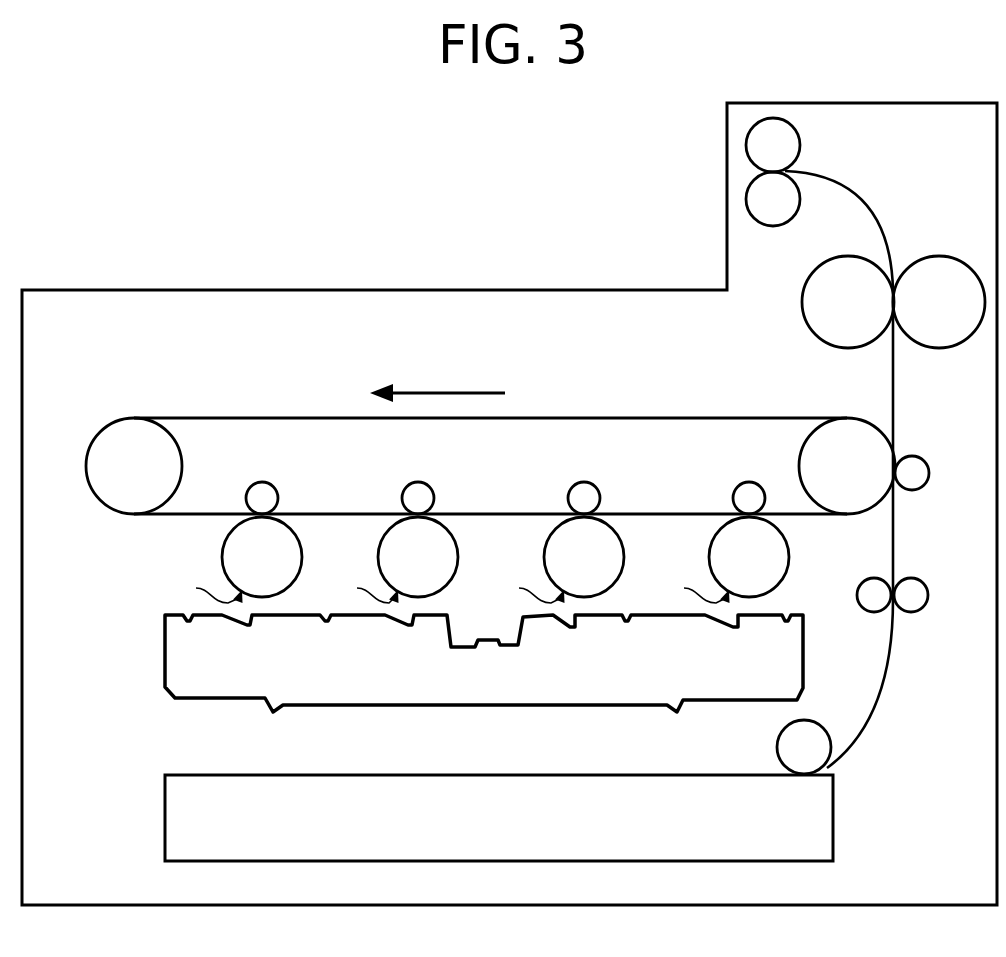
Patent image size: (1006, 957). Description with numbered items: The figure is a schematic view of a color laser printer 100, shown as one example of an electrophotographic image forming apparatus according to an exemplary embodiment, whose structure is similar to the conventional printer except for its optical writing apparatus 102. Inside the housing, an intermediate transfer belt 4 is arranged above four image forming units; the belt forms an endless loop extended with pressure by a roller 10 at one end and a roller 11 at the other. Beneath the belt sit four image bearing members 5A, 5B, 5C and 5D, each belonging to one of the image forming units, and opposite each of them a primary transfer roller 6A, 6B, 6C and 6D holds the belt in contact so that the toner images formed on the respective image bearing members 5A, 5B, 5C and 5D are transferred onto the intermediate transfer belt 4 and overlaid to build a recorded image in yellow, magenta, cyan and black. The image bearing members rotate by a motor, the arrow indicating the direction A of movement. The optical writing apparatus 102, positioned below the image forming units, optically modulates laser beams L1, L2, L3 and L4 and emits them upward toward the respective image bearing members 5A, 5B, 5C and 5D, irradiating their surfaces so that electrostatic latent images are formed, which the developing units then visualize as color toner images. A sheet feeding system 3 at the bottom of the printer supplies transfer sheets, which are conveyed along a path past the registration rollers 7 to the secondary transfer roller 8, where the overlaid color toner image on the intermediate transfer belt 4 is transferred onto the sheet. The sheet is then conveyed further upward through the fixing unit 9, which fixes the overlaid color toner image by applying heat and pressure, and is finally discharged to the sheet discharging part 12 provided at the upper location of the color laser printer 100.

The color laser printer 100 is at (251, 160).
The sheet discharging part 12 is at (525, 305).
The fixing unit 9 is at (940, 258).
The intermediate transfer belt 4 is at (232, 418).
The roller 10 is at (115, 428).
The roller 11 is at (852, 440).
The secondary transfer roller 8 is at (918, 458).
The registration rollers 7 is at (916, 580).
The direction A is at (451, 396).
The primary transfer roller 6A is at (262, 482).
The primary transfer roller 6B is at (418, 482).
The primary transfer roller 6C is at (584, 482).
The primary transfer roller 6D is at (749, 482).
The image bearing member 5A is at (302, 560).
The image bearing member 5B is at (458, 560).
The image bearing member 5C is at (624, 560).
The image bearing member 5D is at (789, 560).
The laser beam L1 is at (202, 596).
The laser beam L2 is at (361, 596).
The laser beam L3 is at (525, 596).
The laser beam L4 is at (690, 596).
The optical writing apparatus 102 is at (165, 645).
The sheet feeding system 3 is at (165, 822).